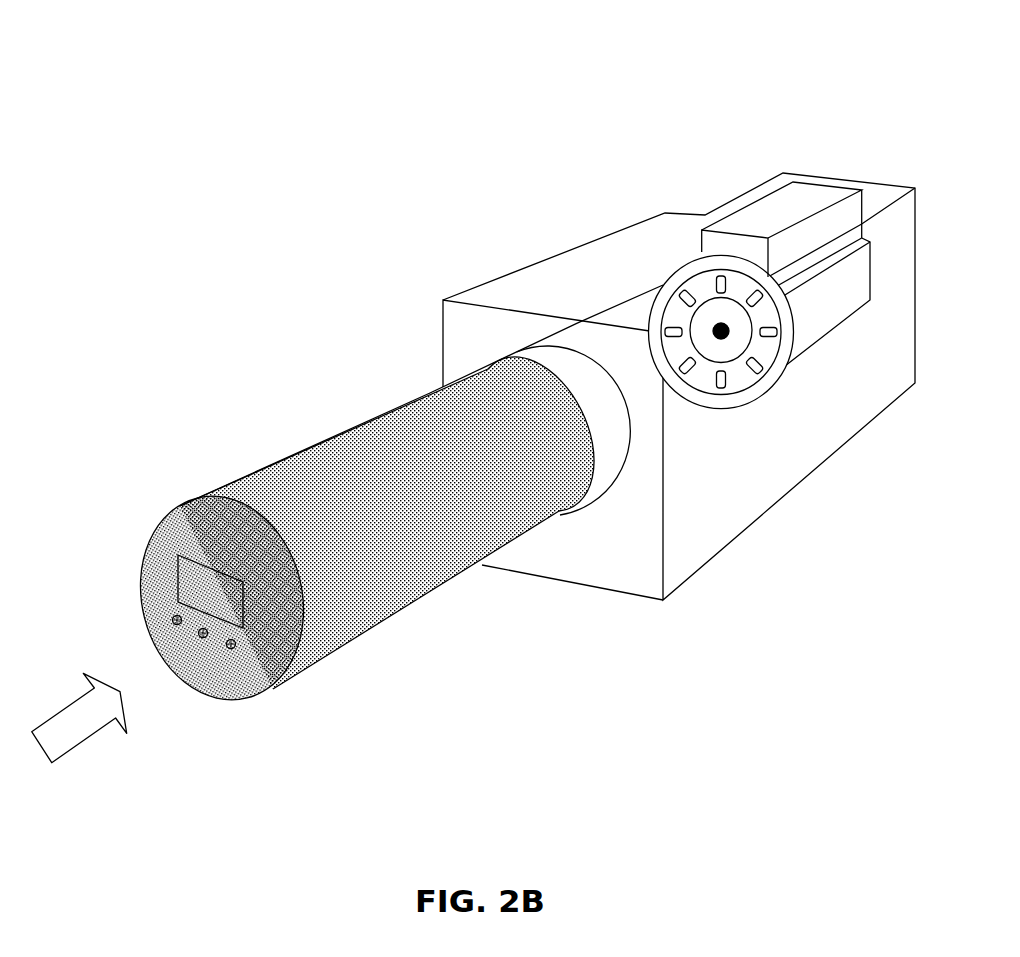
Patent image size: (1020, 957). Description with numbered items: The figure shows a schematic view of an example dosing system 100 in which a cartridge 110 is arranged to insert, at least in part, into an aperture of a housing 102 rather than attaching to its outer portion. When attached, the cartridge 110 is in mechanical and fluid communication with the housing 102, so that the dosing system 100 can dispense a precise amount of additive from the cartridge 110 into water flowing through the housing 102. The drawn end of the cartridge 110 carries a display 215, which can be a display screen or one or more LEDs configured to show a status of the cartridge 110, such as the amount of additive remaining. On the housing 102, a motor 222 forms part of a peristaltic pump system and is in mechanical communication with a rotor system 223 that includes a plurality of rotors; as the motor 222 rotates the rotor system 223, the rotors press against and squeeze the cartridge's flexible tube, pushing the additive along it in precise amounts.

The dosing system 100 is at (297, 72).
The housing 102 is at (663, 601).
The cartridge 110 is at (247, 700).
The display 215 is at (159, 544).
The motor 222 is at (803, 352).
The rotor system 223 is at (677, 258).